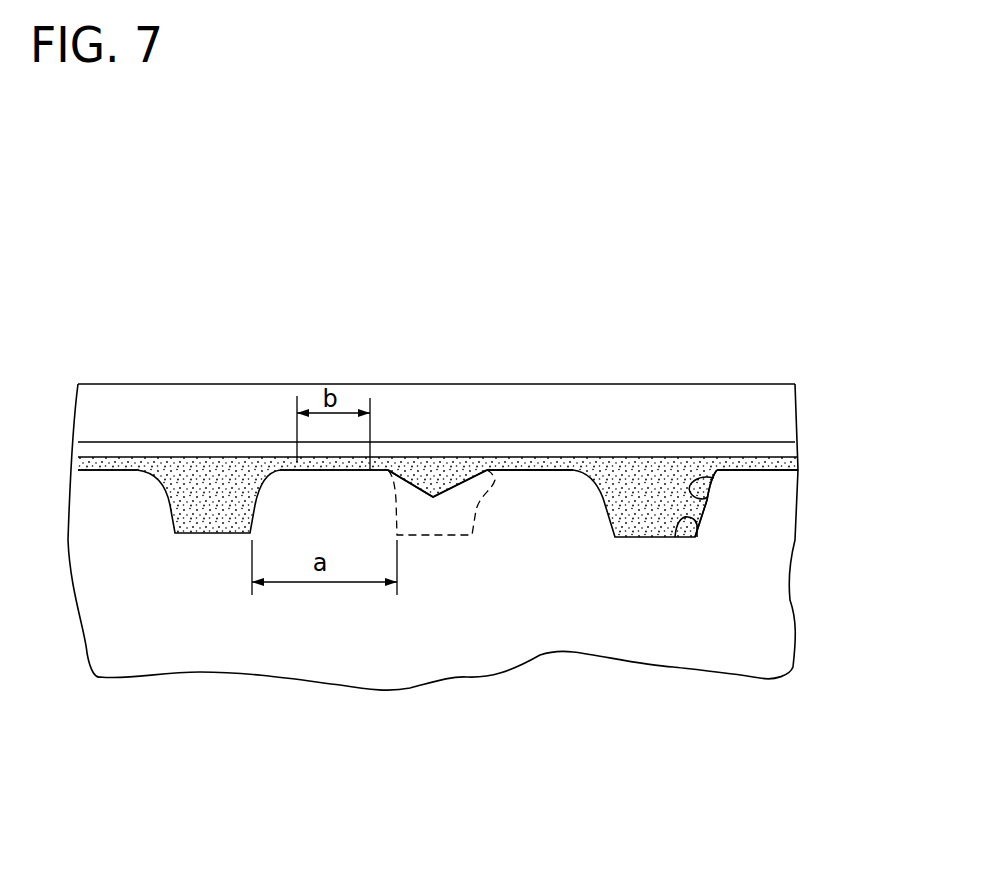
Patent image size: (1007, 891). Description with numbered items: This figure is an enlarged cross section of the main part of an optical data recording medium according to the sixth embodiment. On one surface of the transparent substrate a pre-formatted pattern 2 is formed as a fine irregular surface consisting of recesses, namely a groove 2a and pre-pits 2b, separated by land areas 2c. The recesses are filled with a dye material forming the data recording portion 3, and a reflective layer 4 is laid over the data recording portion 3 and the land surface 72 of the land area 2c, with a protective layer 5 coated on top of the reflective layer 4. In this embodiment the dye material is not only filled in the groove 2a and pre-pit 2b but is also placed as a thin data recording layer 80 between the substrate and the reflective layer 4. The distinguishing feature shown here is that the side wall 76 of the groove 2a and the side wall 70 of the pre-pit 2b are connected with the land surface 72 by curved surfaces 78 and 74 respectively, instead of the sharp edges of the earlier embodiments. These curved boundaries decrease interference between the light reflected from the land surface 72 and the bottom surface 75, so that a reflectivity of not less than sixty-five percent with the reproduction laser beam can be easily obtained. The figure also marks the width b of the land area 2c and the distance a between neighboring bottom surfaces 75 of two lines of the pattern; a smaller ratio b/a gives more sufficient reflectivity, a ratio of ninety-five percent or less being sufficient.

The pre-formatted pattern 2 is at (647, 772).
The groove 2a is at (438, 509).
The pre-pit 2b is at (228, 552).
The land area 2c is at (100, 462).
The data recording portion 3 is at (192, 480).
The reflective layer 4 is at (793, 444).
The protective layer 5 is at (787, 397).
The side wall of pre-pit 70 is at (717, 478).
The land surface 72 is at (570, 467).
The curved surface 74 is at (713, 478).
The bottom surface 75 is at (700, 519).
The side wall of groove 76 is at (452, 477).
The curved surface 78 is at (485, 470).
The thin data recording layer 80 is at (798, 462).